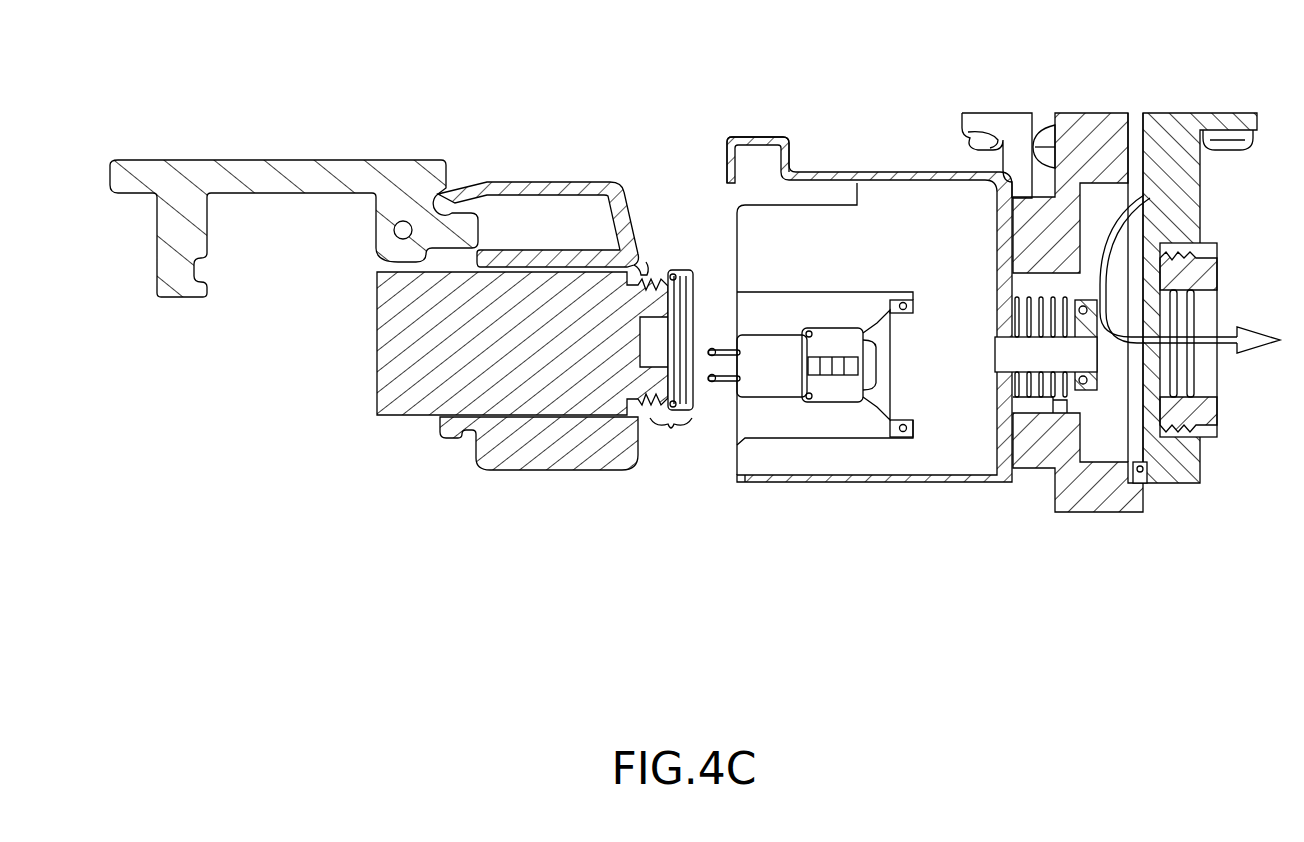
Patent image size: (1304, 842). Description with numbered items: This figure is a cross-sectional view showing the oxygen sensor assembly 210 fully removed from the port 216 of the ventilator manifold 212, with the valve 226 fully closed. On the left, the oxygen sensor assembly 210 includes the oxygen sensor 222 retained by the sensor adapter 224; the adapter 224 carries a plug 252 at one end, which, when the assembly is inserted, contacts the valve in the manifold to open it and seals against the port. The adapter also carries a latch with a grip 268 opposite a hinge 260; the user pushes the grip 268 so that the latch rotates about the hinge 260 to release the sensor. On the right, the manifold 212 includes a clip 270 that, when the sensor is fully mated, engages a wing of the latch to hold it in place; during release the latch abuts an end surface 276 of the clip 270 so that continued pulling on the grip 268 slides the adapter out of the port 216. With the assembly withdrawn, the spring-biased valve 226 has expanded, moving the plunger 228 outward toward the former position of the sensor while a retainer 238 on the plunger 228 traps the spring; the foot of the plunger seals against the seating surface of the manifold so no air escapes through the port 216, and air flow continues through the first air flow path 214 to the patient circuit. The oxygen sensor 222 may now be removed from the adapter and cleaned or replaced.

The oxygen sensor assembly 210 is at (501, 497).
The ventilator manifold 212 is at (1092, 118).
The first air flow path 214 is at (1248, 332).
The port 216 is at (1034, 488).
The oxygen sensor 222 is at (465, 384).
The sensor adapter 224 is at (574, 455).
The valve 226 is at (1110, 392).
The plunger 228 is at (1029, 365).
The retainer 238 is at (1012, 402).
The plug 252 is at (671, 432).
The hinge 260 is at (395, 233).
The grip 268 is at (121, 193).
The clip 270 is at (768, 135).
The end surface of the clip 276 is at (727, 154).